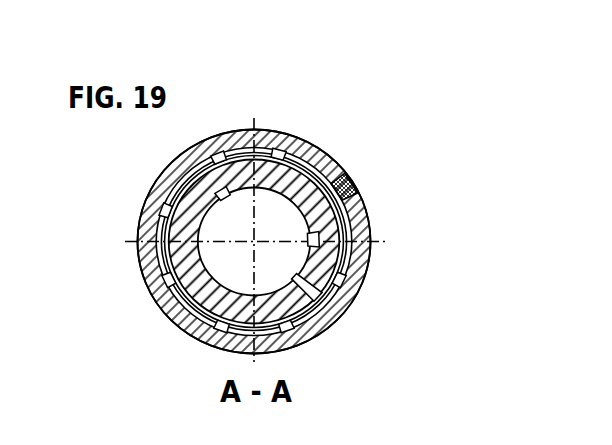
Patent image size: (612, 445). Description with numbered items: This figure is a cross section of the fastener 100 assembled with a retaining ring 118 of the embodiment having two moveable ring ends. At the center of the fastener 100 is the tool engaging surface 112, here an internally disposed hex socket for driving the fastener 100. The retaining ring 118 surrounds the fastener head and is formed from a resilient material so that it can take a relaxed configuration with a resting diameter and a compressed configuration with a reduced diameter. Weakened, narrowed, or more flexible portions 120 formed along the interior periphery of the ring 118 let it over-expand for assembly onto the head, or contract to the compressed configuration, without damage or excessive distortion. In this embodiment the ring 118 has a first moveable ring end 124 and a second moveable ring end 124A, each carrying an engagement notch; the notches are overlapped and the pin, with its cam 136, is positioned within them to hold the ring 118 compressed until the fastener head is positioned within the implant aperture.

The fastener 100 is at (108, 285).
The tool engaging surface 112 is at (249, 203).
The retaining ring 118 is at (158, 166).
The weakened, narrowed, or more flexible portions 120 is at (153, 206).
The moveable ring end 124 is at (359, 168).
The moveable ring end 124A is at (372, 188).
The cam 136 is at (360, 276).